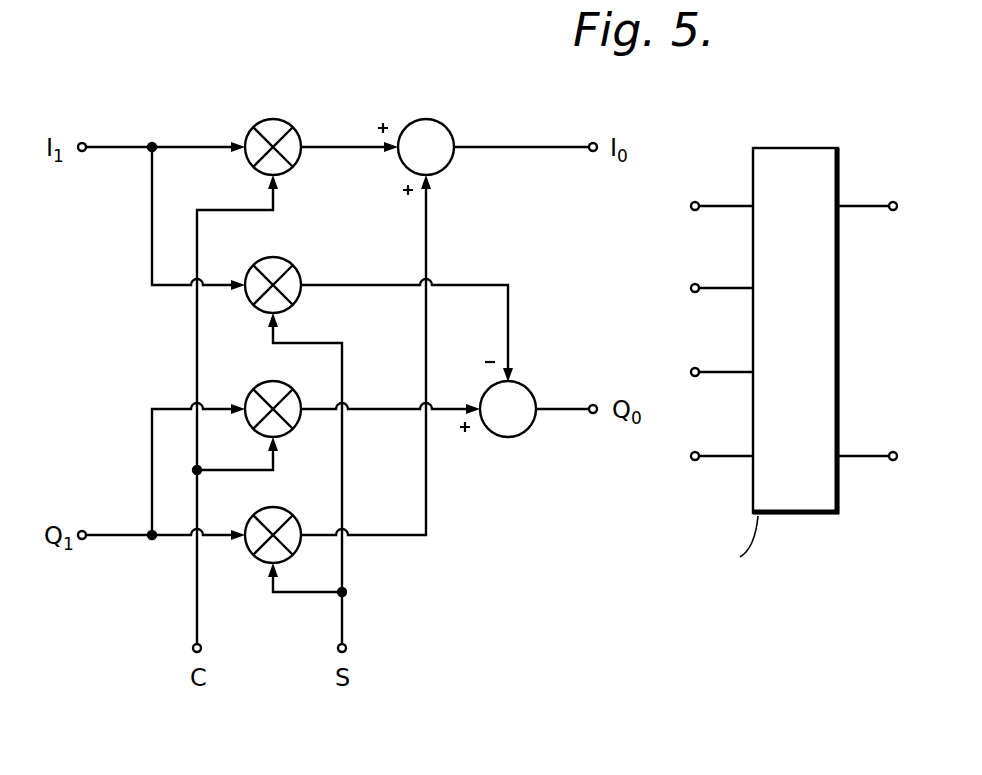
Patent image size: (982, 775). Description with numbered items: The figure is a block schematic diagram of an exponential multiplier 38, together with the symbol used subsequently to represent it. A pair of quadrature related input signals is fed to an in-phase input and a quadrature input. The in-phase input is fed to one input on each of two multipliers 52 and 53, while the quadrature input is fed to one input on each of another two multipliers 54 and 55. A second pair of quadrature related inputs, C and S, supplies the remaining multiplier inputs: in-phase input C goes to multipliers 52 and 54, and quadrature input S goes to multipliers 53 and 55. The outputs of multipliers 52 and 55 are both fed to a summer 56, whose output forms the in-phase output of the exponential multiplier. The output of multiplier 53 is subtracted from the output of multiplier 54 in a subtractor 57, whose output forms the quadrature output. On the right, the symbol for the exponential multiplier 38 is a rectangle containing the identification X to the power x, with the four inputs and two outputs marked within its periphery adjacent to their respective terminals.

The exponential multiplier 38 is at (797, 515).
The multiplier 52 is at (275, 118).
The multiplier 53 is at (300, 264).
The multiplier 54 is at (266, 380).
The multiplier 55 is at (297, 516).
The summer 56 is at (444, 123).
The subtractor 57 is at (524, 434).